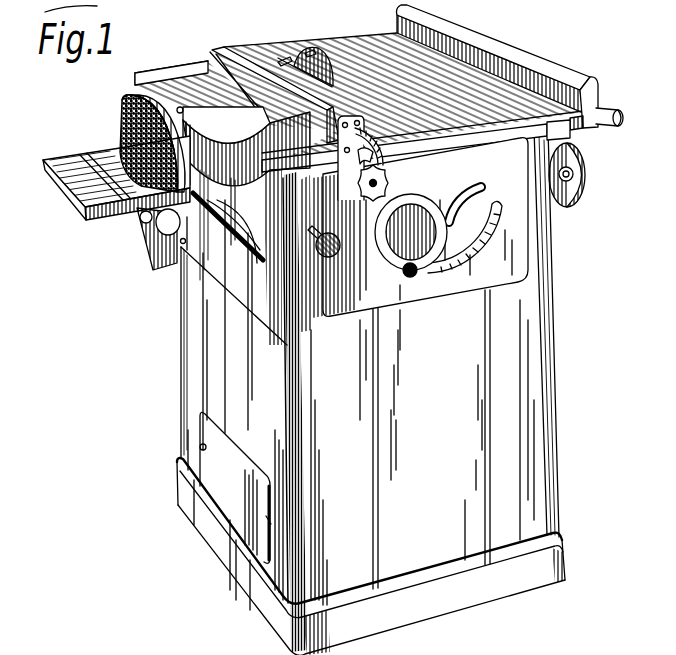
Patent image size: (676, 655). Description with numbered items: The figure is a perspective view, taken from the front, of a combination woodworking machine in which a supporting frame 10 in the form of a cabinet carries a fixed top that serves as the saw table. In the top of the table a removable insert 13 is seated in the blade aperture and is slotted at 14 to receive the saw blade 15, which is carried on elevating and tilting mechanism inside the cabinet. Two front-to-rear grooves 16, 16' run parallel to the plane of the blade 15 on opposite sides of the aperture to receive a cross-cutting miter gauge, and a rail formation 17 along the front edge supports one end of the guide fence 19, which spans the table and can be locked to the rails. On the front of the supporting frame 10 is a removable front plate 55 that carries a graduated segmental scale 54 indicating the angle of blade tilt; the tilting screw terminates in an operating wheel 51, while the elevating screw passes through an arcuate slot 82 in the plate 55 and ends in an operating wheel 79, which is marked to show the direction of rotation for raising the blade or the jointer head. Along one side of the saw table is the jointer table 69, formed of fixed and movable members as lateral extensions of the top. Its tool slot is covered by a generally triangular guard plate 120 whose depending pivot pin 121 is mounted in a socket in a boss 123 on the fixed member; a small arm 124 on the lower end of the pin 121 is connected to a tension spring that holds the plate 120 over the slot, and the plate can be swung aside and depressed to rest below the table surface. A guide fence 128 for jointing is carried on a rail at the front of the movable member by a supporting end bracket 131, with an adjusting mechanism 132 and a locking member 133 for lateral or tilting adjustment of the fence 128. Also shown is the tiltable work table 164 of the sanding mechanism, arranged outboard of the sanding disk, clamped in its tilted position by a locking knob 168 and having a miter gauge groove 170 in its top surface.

The supporting frame 10 is at (557, 345).
The removable insert or cover plate 13 is at (262, 56).
The slot 14 is at (286, 58).
The saw blade 15 is at (311, 51).
The groove 16 is at (399, 96).
The groove 16' is at (171, 58).
The front rail formation 17 is at (497, 140).
The guide fence 19 is at (553, 77).
The operating wheel 51 is at (593, 177).
The graduated segmental scale 54 is at (493, 230).
The removable front plate 55 is at (523, 253).
The jointer table 69 is at (153, 68).
The operating knob or wheel 79 is at (393, 252).
The arcuate slot 82 is at (470, 198).
The guard or cover plate 120 is at (227, 120).
The depending pivot pin 121 is at (133, 88).
The laterally extending boss 123 is at (124, 112).
The arm 124 is at (119, 134).
The guide fence 128 is at (221, 50).
The supporting end bracket 131 is at (318, 236).
The adjusting mechanism 132 is at (365, 196).
The locking member 133 is at (392, 174).
The tiltable work supporting table 164 is at (113, 171).
The knob 168 is at (153, 219).
The miter gauge receiving groove 170 is at (80, 157).